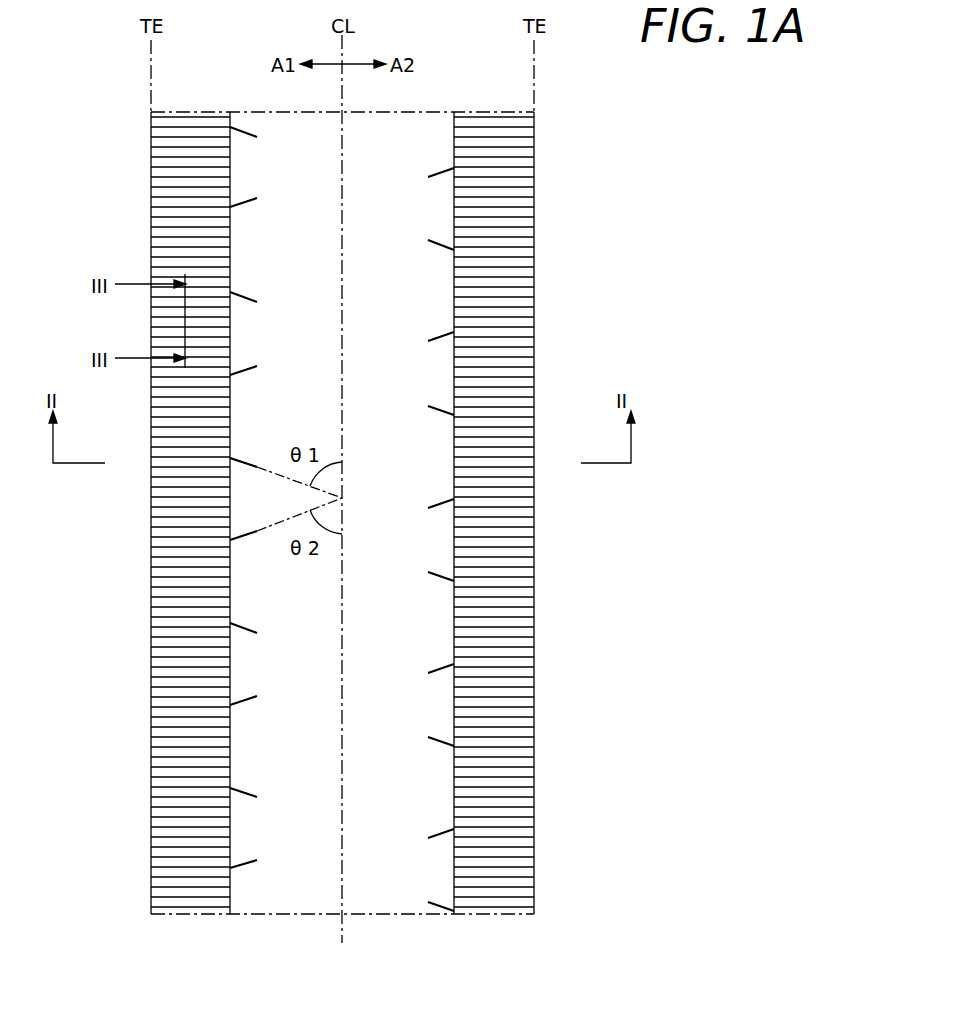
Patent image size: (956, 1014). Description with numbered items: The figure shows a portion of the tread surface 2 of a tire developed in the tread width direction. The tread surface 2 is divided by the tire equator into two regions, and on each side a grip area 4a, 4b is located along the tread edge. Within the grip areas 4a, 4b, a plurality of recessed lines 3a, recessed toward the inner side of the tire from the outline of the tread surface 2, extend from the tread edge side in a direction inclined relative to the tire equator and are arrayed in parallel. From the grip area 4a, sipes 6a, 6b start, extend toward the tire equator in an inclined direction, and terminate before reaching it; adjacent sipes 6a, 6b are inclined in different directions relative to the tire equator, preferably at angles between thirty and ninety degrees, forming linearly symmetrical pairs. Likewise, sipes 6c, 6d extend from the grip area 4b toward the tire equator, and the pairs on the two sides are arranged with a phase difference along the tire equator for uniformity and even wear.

The tread surface 2 is at (535, 158).
The recessed line 3a is at (192, 673).
The grip area 4a is at (190, 192).
The grip area 4b is at (493, 226).
The sipe 6a is at (243, 294).
The sipe 6b is at (243, 359).
The sipe 6c is at (436, 340).
The sipe 6d is at (436, 408).